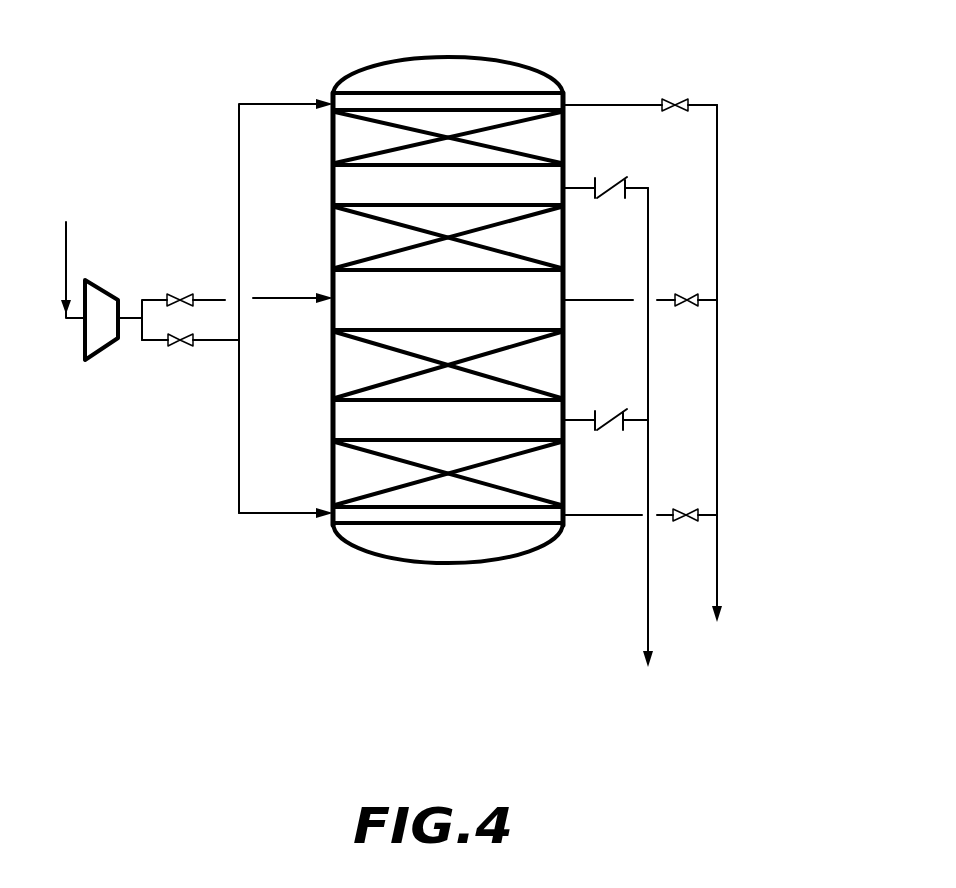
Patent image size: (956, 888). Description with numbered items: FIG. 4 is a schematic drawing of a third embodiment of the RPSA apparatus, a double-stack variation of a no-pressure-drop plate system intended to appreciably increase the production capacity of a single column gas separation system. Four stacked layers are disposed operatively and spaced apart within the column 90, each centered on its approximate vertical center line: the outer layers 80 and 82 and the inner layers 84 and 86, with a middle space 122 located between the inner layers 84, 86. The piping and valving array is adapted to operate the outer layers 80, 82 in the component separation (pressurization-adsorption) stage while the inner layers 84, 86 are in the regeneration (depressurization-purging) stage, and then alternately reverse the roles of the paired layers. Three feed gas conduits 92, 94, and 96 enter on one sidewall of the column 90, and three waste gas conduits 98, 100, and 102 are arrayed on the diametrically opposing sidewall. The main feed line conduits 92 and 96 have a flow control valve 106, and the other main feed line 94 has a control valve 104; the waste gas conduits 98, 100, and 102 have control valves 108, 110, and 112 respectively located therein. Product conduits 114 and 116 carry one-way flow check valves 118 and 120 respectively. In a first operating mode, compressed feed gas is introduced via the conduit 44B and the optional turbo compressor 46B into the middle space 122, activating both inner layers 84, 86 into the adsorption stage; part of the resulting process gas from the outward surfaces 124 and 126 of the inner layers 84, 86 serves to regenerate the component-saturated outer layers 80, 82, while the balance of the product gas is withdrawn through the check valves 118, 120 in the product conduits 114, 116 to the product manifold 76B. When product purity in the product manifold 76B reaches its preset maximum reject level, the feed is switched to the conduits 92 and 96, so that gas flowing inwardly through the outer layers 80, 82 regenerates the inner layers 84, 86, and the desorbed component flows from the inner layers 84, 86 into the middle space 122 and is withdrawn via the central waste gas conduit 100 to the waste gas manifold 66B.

The column 90 is at (367, 62).
The outer layer 80 is at (566, 140).
The inner layer 84 is at (566, 252).
The inner layer 86 is at (566, 362).
The outer layer 82 is at (566, 472).
The middle space 122 is at (485, 312).
The outward surface 124 is at (408, 204).
The outward surface 126 is at (407, 408).
The conduit 44B is at (66, 248).
The turbo compressor 46B is at (110, 290).
The control valve 104 is at (188, 294).
The flow control valve 106 is at (192, 343).
The feed gas conduit 92 is at (270, 103).
The feed gas conduit 94 is at (296, 297).
The feed gas conduit 96 is at (275, 512).
The waste gas conduit 98 is at (615, 103).
The waste gas conduit 100 is at (588, 298).
The waste gas conduit 102 is at (606, 513).
The control valve 108 is at (683, 99).
The control valve 110 is at (687, 306).
The control valve 112 is at (682, 512).
The product conduit 114 is at (649, 212).
The product conduit 116 is at (624, 422).
The check valve 118 is at (624, 178).
The check valve 120 is at (622, 410).
The waste gas manifold 66B is at (718, 421).
The product manifold 76B is at (647, 612).